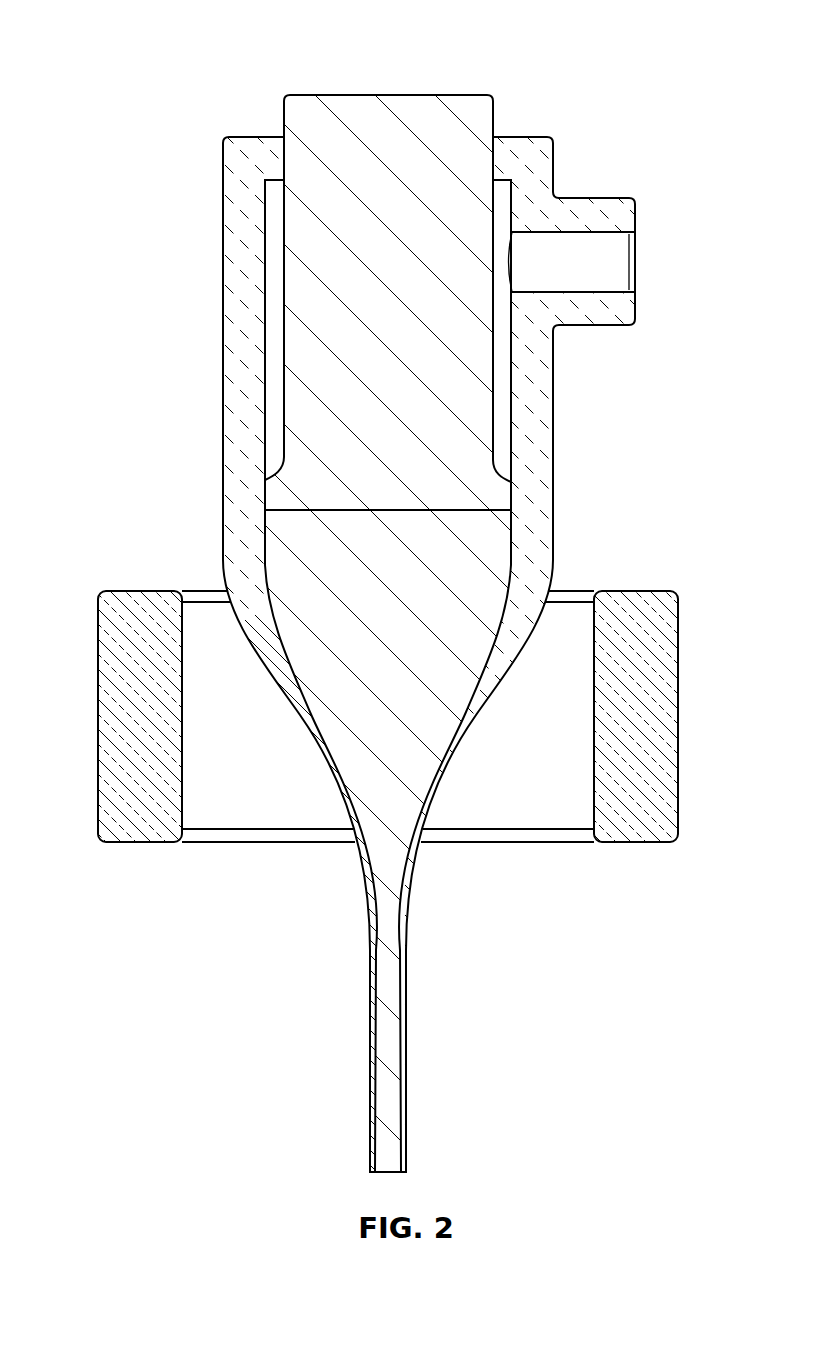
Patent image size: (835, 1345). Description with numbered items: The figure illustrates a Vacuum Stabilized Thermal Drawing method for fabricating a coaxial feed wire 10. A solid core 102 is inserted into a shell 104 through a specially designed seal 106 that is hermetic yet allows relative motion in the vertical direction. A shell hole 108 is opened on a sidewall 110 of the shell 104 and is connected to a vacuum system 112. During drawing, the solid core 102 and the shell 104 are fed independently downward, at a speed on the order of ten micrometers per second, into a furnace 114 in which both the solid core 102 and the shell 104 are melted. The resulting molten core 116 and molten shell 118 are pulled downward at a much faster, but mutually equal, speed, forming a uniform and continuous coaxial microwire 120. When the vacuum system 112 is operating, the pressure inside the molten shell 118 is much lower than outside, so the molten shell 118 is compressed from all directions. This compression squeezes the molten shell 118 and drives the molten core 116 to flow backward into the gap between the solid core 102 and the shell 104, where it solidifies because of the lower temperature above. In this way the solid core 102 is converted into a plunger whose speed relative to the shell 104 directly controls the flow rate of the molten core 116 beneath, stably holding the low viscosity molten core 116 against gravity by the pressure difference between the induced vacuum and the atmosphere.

The coaxial feed wire 10 is at (392, 1142).
The solid core 102 is at (347, 117).
The shell 104 is at (252, 200).
The seal 106 is at (494, 120).
The shell hole 108 is at (560, 247).
The sidewall 110 is at (530, 333).
The vacuum system 112 is at (634, 244).
The furnace 114 is at (122, 806).
The molten core 116 is at (382, 852).
The molten shell 118 is at (320, 757).
The coaxial microwire 120 is at (383, 1110).